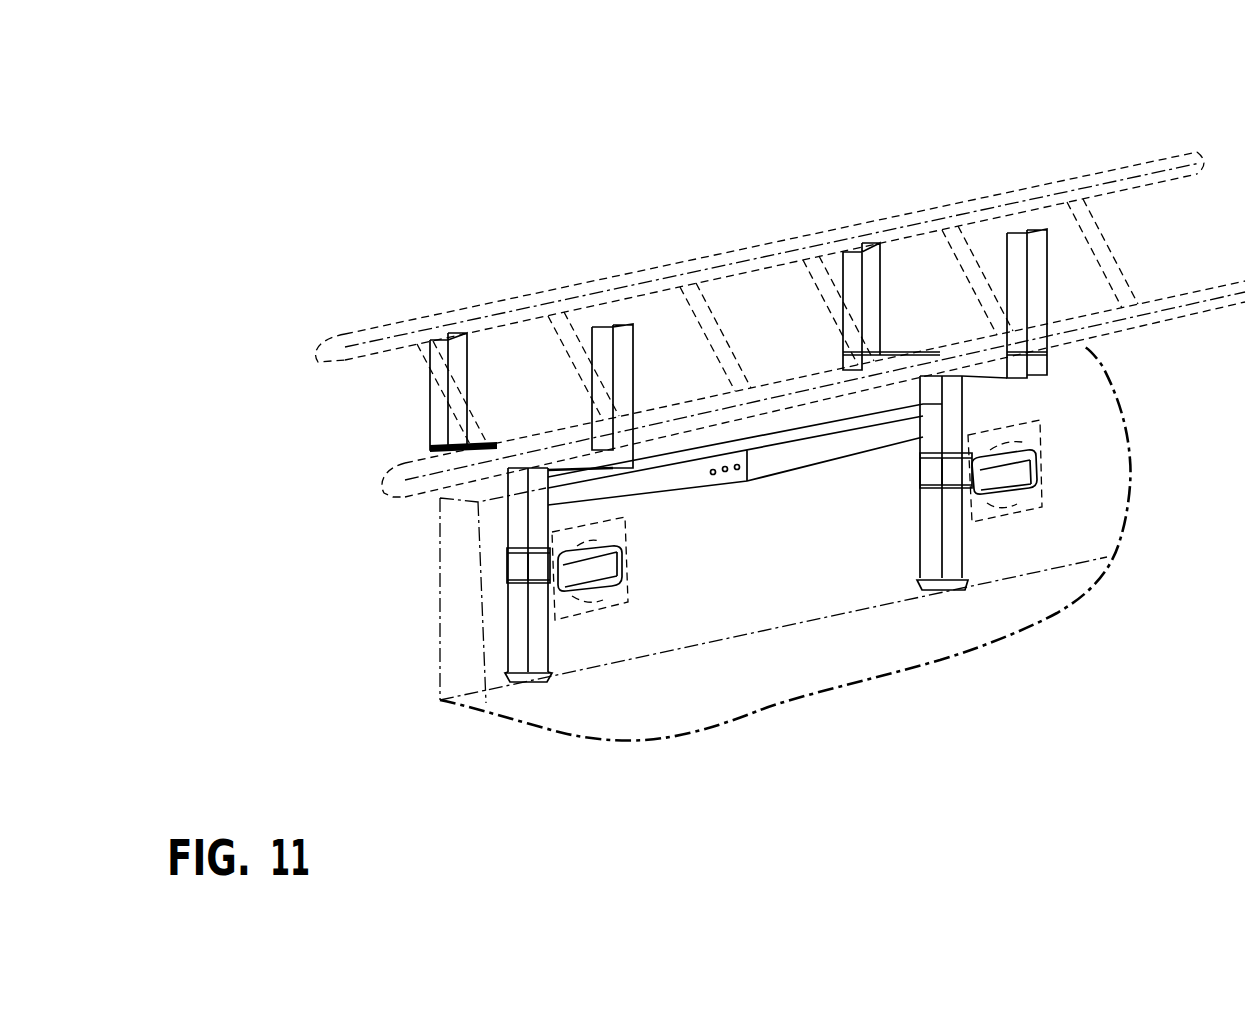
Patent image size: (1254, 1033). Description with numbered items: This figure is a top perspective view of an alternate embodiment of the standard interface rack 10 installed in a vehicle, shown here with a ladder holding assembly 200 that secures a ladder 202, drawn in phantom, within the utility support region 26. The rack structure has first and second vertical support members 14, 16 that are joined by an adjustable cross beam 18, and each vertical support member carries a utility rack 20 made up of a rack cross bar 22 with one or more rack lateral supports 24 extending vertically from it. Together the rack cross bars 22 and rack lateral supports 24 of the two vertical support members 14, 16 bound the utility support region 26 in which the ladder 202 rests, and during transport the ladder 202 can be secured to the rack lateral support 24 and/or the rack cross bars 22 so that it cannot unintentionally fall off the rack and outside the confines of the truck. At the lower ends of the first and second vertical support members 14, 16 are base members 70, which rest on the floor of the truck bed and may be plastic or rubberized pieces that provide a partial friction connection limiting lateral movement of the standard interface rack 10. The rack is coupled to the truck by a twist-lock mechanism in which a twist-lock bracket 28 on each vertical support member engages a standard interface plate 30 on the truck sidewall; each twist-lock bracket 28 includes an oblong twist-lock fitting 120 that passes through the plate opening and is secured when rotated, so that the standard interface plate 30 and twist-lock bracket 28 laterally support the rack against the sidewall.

The standard interface rack 10 is at (426, 263).
The ladder holding assembly 200 is at (504, 280).
The ladder 202 is at (658, 268).
The utility support region 26 is at (767, 314).
The utility rack 20 is at (400, 410).
The rack lateral support 24 is at (1017, 243).
The rack cross bar 22 is at (1010, 378).
The adjustable cross beam 18 is at (783, 463).
The first vertical support member 14 is at (510, 623).
The second vertical support member 16 is at (958, 552).
The base member 70 is at (935, 591).
The twist-lock bracket 28 is at (930, 471).
The twist-lock fitting 120 is at (603, 568).
The standard interface plate 30 is at (627, 533).